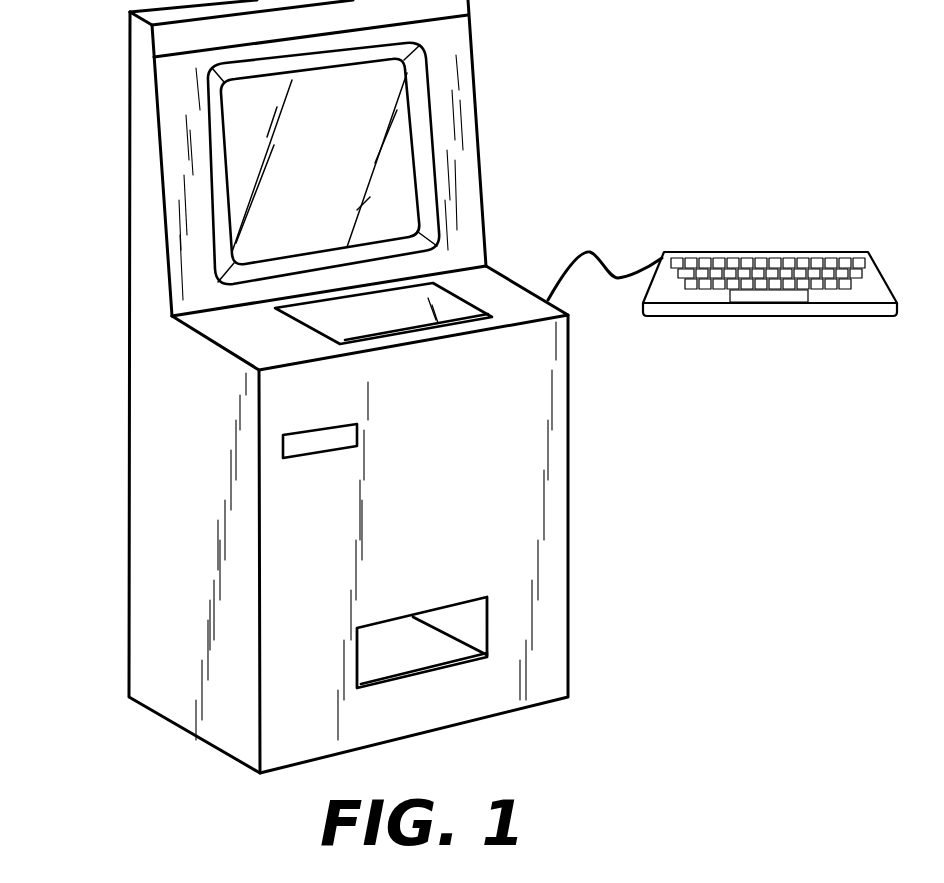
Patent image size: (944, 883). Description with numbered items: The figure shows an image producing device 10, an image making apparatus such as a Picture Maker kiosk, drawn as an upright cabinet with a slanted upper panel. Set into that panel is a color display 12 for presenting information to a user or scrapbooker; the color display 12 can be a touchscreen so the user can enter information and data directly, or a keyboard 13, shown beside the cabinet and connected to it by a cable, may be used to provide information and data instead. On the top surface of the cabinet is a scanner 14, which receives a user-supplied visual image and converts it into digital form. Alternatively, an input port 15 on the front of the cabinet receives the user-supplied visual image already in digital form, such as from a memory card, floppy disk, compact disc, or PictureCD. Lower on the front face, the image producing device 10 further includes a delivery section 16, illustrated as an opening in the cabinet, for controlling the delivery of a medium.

The image producing device 10 is at (138, 108).
The color display 12 is at (400, 128).
The keyboard 13 is at (747, 252).
The scanner 14 is at (460, 310).
The input port 15 is at (335, 423).
The delivery section 16 is at (468, 617).